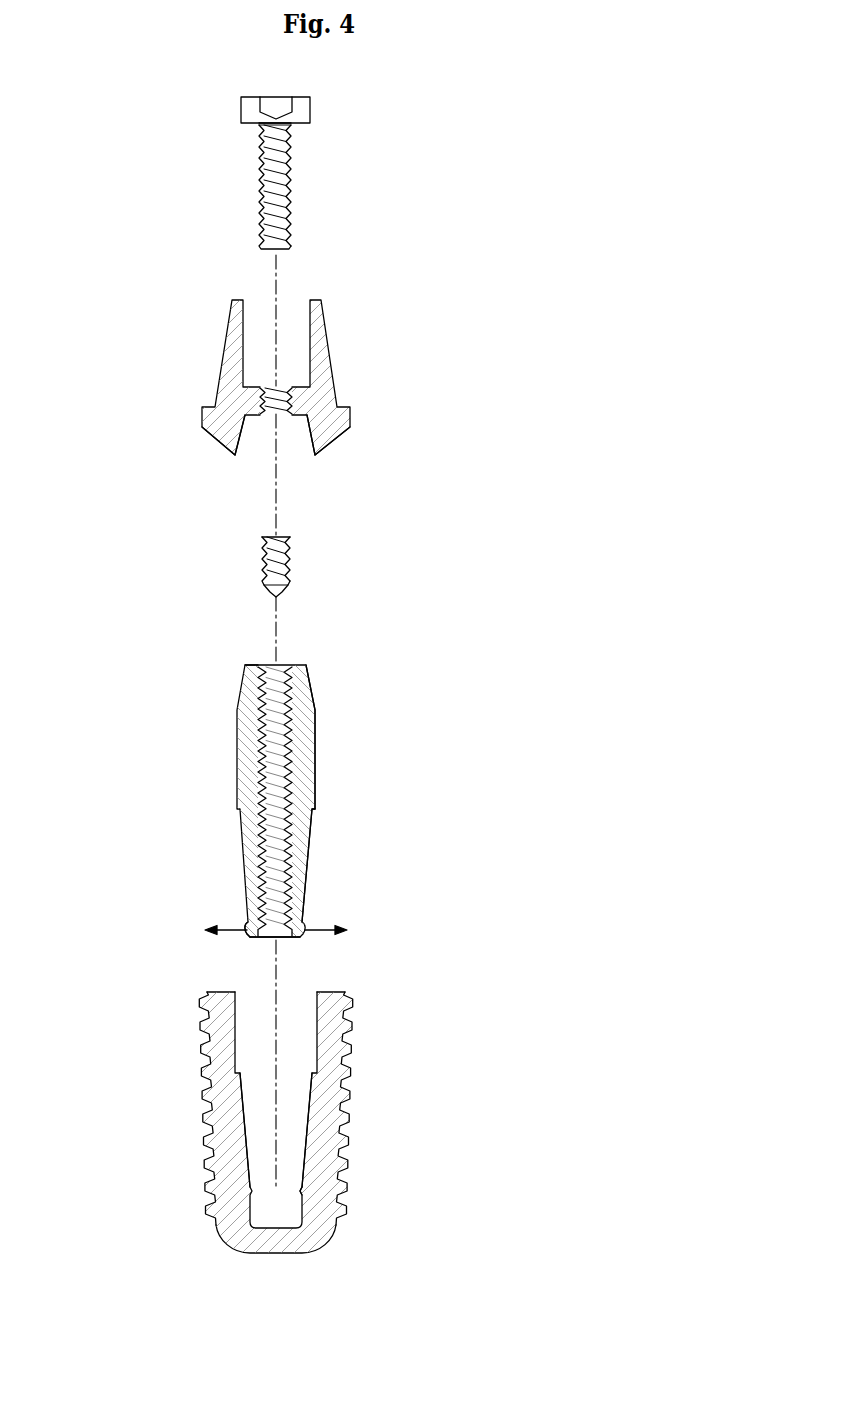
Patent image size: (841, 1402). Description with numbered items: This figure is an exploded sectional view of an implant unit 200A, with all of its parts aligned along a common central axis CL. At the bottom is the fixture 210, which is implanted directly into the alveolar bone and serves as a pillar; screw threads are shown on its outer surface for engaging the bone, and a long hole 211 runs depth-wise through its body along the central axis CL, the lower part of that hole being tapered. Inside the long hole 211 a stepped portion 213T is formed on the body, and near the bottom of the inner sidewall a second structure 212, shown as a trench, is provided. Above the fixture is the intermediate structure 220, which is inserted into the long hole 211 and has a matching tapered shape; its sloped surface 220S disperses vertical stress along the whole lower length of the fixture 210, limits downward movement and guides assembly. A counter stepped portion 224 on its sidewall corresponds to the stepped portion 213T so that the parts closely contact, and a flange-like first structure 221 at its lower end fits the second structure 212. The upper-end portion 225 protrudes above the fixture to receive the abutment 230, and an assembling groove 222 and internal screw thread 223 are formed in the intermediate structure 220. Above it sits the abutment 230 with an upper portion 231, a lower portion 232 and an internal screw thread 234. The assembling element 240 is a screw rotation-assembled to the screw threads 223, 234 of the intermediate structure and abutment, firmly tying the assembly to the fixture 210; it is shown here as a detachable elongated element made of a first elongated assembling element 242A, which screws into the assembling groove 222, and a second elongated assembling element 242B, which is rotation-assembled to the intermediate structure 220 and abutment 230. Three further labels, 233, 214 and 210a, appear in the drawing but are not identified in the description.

The implant unit 200A is at (356, 220).
The central axis CL is at (280, 266).
The assembling element 240 is at (250, 160).
The second elongated assembling element 242B is at (258, 225).
The abutment 230 is at (230, 402).
The upper portion 231 is at (310, 368).
The lower portion 232 is at (312, 447).
The threaded hole of coupling member 233 is at (271, 392).
The screw thread 234 is at (266, 414).
The first elongated assembling element 242A is at (263, 582).
The intermediate structure 220 is at (247, 768).
The first structure 221 is at (250, 927).
The assembling groove 222 is at (272, 665).
The screw thread 223 is at (280, 667).
The counter stepped portion 224 is at (314, 811).
The upper-end portion 225 is at (312, 683).
The sloped surface 220S is at (305, 915).
The fixture 210 is at (216, 1232).
The long hole 211 is at (293, 1023).
The second structure 212 is at (302, 1190).
The stepped portion 213T is at (316, 1073).
The outer thread surface of fixture 214 is at (207, 1103).
The tapered inner wall of fixture 210a is at (312, 1133).